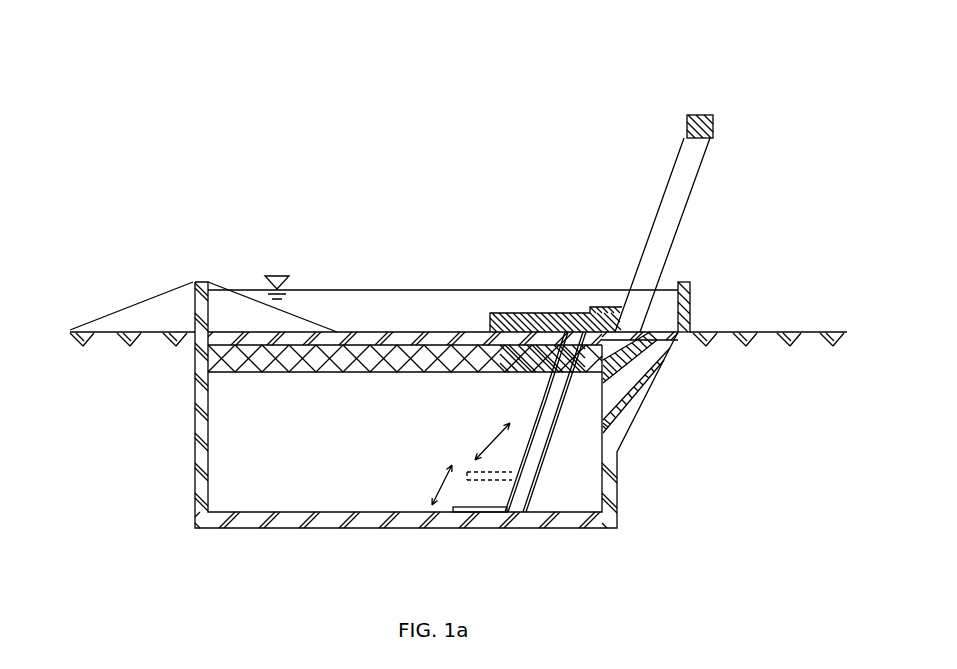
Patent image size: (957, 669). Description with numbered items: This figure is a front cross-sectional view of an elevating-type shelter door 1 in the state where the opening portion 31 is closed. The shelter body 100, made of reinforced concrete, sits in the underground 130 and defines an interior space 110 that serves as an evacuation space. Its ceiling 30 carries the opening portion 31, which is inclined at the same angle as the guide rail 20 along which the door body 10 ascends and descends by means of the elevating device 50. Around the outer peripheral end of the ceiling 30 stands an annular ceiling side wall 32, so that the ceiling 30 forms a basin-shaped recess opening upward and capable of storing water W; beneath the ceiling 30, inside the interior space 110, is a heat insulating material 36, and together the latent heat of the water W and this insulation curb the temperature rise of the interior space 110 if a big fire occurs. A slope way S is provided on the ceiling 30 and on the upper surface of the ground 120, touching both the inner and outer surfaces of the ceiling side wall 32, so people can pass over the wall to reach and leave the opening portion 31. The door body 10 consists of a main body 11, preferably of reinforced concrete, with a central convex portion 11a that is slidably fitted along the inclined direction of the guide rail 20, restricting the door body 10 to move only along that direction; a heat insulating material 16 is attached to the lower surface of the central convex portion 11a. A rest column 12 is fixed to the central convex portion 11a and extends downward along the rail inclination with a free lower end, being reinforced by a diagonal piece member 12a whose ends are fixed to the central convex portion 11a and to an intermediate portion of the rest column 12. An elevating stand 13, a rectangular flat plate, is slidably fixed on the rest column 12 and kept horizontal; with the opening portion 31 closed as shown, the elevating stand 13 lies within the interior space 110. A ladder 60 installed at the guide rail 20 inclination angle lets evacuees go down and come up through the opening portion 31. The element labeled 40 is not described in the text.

The elevating-type shelter door 1 is at (710, 98).
The shelter body 100 is at (793, 145).
The door body 10 is at (559, 270).
The main body 11 is at (543, 312).
The central convex portion 11a is at (580, 307).
The rest column 12 is at (511, 422).
The diagonal piece member 12a is at (540, 392).
The elevating stand 13 is at (482, 513).
The heat insulating material 16 is at (503, 367).
The guide rail 20 is at (682, 230).
The ceiling 30 is at (387, 330).
The opening portion 31 is at (590, 372).
The ceiling side wall 32 is at (690, 297).
The heat insulating material 36 is at (263, 372).
The cap 40 is at (687, 123).
The elevating device 50 is at (693, 192).
The ladder 60 is at (532, 483).
The interior space 110 is at (312, 468).
The ground 120 is at (152, 335).
The underground 130 is at (722, 445).
The slope way S is at (157, 298).
The water W is at (443, 298).